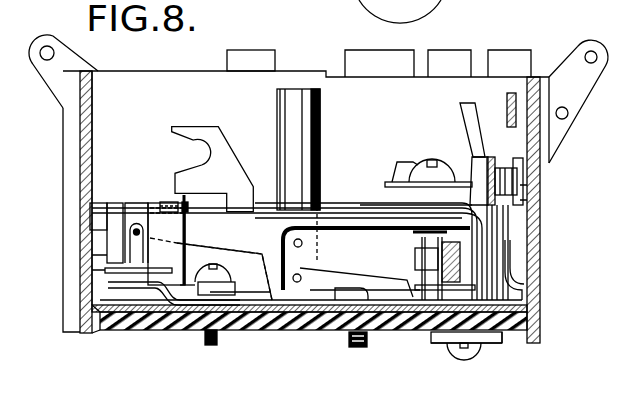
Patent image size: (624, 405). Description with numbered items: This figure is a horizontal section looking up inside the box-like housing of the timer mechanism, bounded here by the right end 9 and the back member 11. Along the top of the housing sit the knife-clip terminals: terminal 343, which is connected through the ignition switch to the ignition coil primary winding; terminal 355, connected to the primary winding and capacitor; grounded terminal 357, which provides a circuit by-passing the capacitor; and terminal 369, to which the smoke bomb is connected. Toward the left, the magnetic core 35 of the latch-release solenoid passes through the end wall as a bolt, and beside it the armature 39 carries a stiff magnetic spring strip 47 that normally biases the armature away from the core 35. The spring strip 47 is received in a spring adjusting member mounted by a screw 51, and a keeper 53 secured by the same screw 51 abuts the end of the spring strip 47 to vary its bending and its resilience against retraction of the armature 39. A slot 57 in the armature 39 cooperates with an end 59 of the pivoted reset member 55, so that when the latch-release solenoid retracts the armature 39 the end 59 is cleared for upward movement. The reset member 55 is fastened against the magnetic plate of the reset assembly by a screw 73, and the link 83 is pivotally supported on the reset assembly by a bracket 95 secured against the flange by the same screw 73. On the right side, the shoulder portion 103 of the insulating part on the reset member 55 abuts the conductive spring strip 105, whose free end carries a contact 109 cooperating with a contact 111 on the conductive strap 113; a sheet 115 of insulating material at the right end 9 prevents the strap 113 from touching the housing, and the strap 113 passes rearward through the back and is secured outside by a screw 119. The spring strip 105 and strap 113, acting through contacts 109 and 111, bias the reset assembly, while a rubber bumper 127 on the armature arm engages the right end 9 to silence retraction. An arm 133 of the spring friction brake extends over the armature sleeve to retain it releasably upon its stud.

The end 9 is at (540, 170).
The back member 11 is at (261, 322).
The magnetic core 35 is at (98, 205).
The armature 39 is at (200, 206).
The spring strip 47 is at (118, 228).
The screw 51 is at (223, 270).
The keeper 53 is at (155, 266).
The reset member 55 is at (258, 224).
The slot 57 is at (138, 205).
The end 59 is at (143, 205).
The screw 73 is at (452, 263).
The link 83 is at (376, 252).
The bracket 95 is at (422, 235).
The shoulder portion 103 is at (470, 155).
The conductive spring strip 105 is at (489, 157).
The contact 109 is at (515, 210).
The contact 111 is at (520, 200).
The conductive strap 113 is at (530, 185).
The sheet of insulating material 115 is at (535, 277).
The screw 119 is at (447, 338).
The rubber bumper 127 is at (511, 240).
The arm 133 is at (462, 140).
The terminal 343 is at (355, 58).
The terminal 355 is at (437, 53).
The grounded terminal 357 is at (505, 53).
The terminal 369 is at (236, 60).